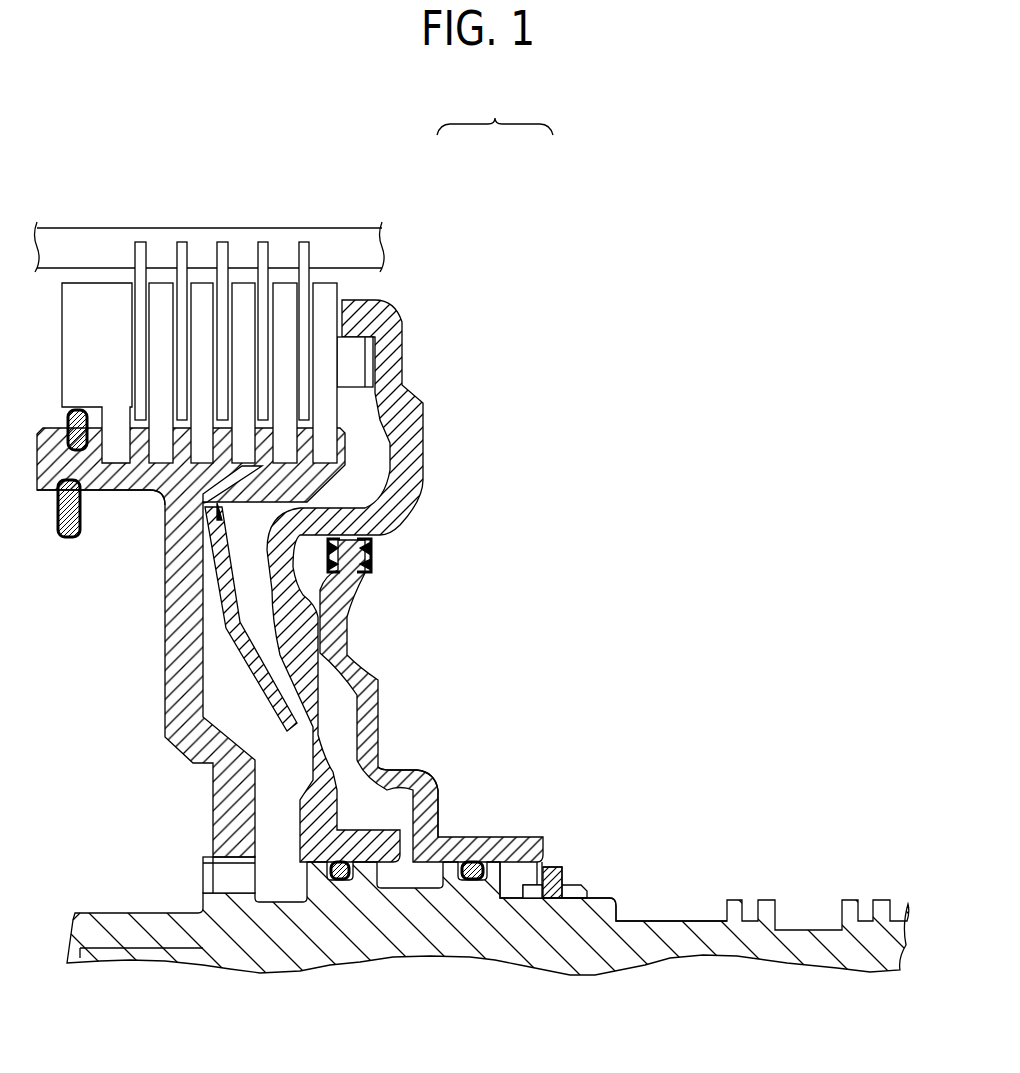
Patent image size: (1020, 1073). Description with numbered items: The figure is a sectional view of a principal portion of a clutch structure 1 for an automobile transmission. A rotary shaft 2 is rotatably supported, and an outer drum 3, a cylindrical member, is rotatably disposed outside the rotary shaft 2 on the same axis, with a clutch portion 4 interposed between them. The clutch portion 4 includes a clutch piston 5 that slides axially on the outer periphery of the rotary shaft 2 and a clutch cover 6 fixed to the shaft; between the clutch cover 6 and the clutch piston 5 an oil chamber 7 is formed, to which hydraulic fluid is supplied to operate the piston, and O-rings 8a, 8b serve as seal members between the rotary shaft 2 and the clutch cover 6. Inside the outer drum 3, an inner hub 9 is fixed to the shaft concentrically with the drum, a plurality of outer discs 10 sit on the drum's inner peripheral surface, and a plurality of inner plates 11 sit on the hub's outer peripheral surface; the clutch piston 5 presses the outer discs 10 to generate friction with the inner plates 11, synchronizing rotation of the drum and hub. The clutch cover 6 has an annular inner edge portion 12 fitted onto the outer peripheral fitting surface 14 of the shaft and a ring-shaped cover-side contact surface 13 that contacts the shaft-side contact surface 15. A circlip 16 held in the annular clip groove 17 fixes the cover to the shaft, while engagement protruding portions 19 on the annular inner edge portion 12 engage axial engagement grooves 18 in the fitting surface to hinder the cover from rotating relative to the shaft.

The clutch structure 1 is at (495, 110).
The rotary shaft 2 is at (710, 863).
The outer drum 3 is at (367, 220).
The clutch portion 4 is at (456, 447).
The clutch piston 5 is at (267, 572).
The clutch cover 6 is at (380, 707).
The oil chamber 7 is at (378, 810).
The O-ring 8a is at (345, 862).
The O-ring 8b is at (467, 868).
The inner hub 9 is at (152, 500).
The outer discs 10 is at (133, 255).
The inner plates 11 is at (283, 296).
The annular inner edge portion 12 is at (532, 893).
The cover-side contact surface 13 is at (530, 873).
The outer peripheral fitting surface 14 is at (520, 878).
The shaft-side contact surface 15 is at (532, 887).
The circlip 16 is at (567, 867).
The annular clip groove 17 is at (563, 886).
The engagement grooves 18 is at (580, 897).
The engagement protruding portions 19 is at (515, 893).